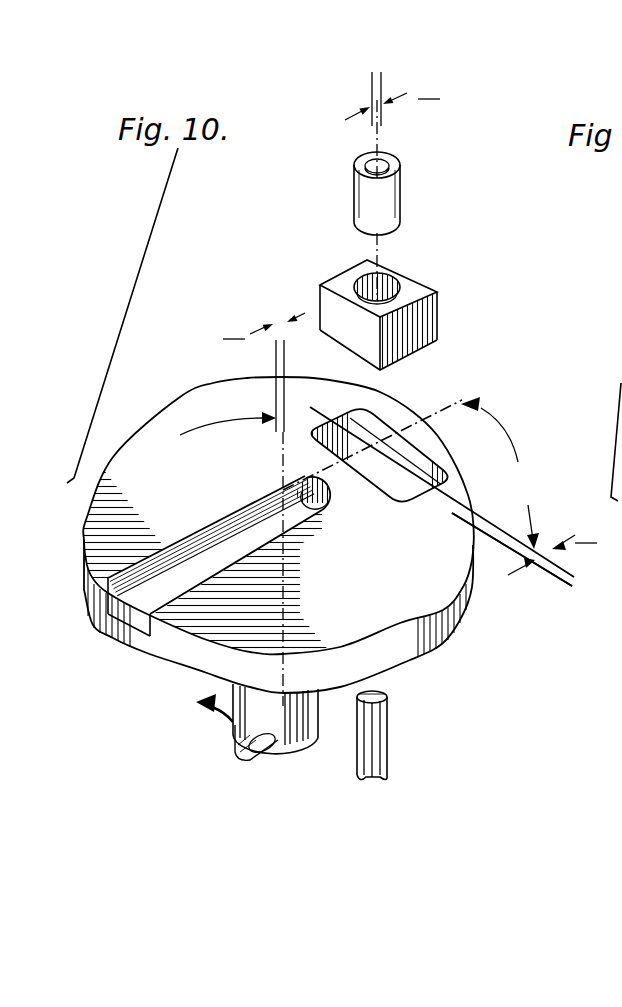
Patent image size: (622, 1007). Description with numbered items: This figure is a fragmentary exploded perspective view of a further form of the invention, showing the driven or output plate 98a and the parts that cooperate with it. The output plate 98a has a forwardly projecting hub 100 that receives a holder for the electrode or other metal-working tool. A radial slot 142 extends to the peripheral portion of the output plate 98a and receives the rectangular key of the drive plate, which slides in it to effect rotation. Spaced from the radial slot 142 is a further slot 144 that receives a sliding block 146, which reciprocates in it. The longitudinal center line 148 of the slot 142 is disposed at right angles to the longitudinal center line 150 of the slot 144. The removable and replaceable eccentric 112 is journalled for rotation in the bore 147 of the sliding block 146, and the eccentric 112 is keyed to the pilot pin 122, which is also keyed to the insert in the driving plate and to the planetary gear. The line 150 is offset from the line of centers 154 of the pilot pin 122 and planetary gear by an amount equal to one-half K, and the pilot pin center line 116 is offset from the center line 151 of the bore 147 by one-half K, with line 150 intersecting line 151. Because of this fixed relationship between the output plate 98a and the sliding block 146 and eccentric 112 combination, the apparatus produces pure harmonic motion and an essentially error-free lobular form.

The output plate 98a is at (148, 410).
The radial slot 142 is at (240, 543).
The slot 144 is at (462, 450).
The longitudinal center line 148 is at (460, 406).
The longitudinal center line 150 is at (541, 546).
The line of centers 154 is at (549, 578).
The center line 116 is at (372, 250).
The center line 151 is at (382, 134).
The eccentric 112 is at (401, 188).
The sliding block 146 is at (439, 309).
The bore 147 is at (390, 285).
The hub 100 is at (232, 725).
The pilot pin 122 is at (391, 737).